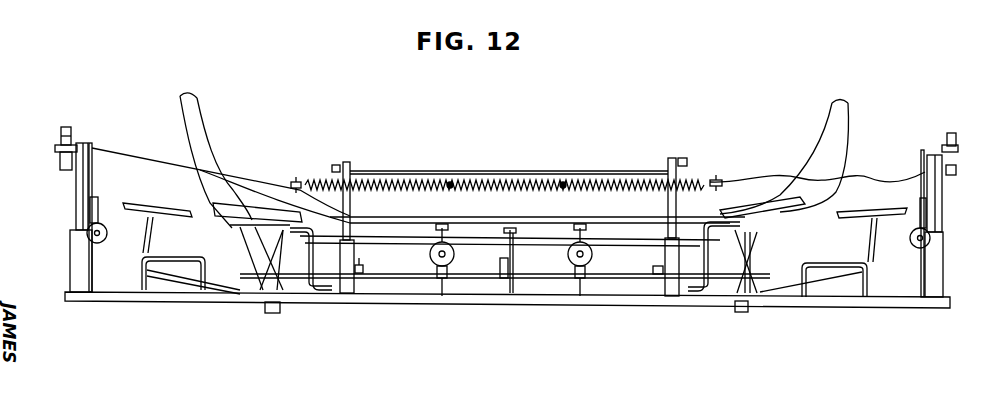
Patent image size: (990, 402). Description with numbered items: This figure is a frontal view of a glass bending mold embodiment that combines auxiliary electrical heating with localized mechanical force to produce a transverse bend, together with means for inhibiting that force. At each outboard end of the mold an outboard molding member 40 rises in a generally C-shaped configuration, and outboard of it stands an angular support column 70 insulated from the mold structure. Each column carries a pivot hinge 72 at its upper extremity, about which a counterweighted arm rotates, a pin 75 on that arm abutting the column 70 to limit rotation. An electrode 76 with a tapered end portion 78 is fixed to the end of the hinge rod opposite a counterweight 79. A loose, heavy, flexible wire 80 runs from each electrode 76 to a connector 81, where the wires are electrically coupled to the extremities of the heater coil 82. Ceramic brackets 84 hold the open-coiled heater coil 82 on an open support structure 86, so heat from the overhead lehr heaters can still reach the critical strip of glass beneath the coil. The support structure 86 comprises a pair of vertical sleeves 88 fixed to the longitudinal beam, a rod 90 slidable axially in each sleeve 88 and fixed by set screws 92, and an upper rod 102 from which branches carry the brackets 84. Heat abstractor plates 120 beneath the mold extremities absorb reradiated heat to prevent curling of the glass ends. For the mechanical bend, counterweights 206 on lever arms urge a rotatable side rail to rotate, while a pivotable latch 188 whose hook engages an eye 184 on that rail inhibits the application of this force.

The outboard molding member 40 is at (181, 112).
The angular support column 70 is at (78, 211).
The pivot hinge 72 is at (90, 143).
The pin 75 is at (88, 196).
The electrode 76 is at (60, 143).
The tapered end portion 78 is at (65, 127).
The counterweight 79 is at (104, 229).
The flexible wire 80 is at (283, 190).
The connector 81 is at (294, 180).
The heater coil 82 is at (510, 185).
The ceramic bracket 84 is at (449, 183).
The open support structure 86 is at (571, 170).
The vertical sleeve 88 is at (345, 257).
The rod 90 is at (350, 203).
The set screw 92 is at (362, 272).
The rod 102 is at (610, 171).
The heat abstractor plate 120 is at (143, 203).
The eye 184 is at (510, 228).
The pivotable latch 188 is at (512, 256).
The counterweight 206 is at (576, 260).